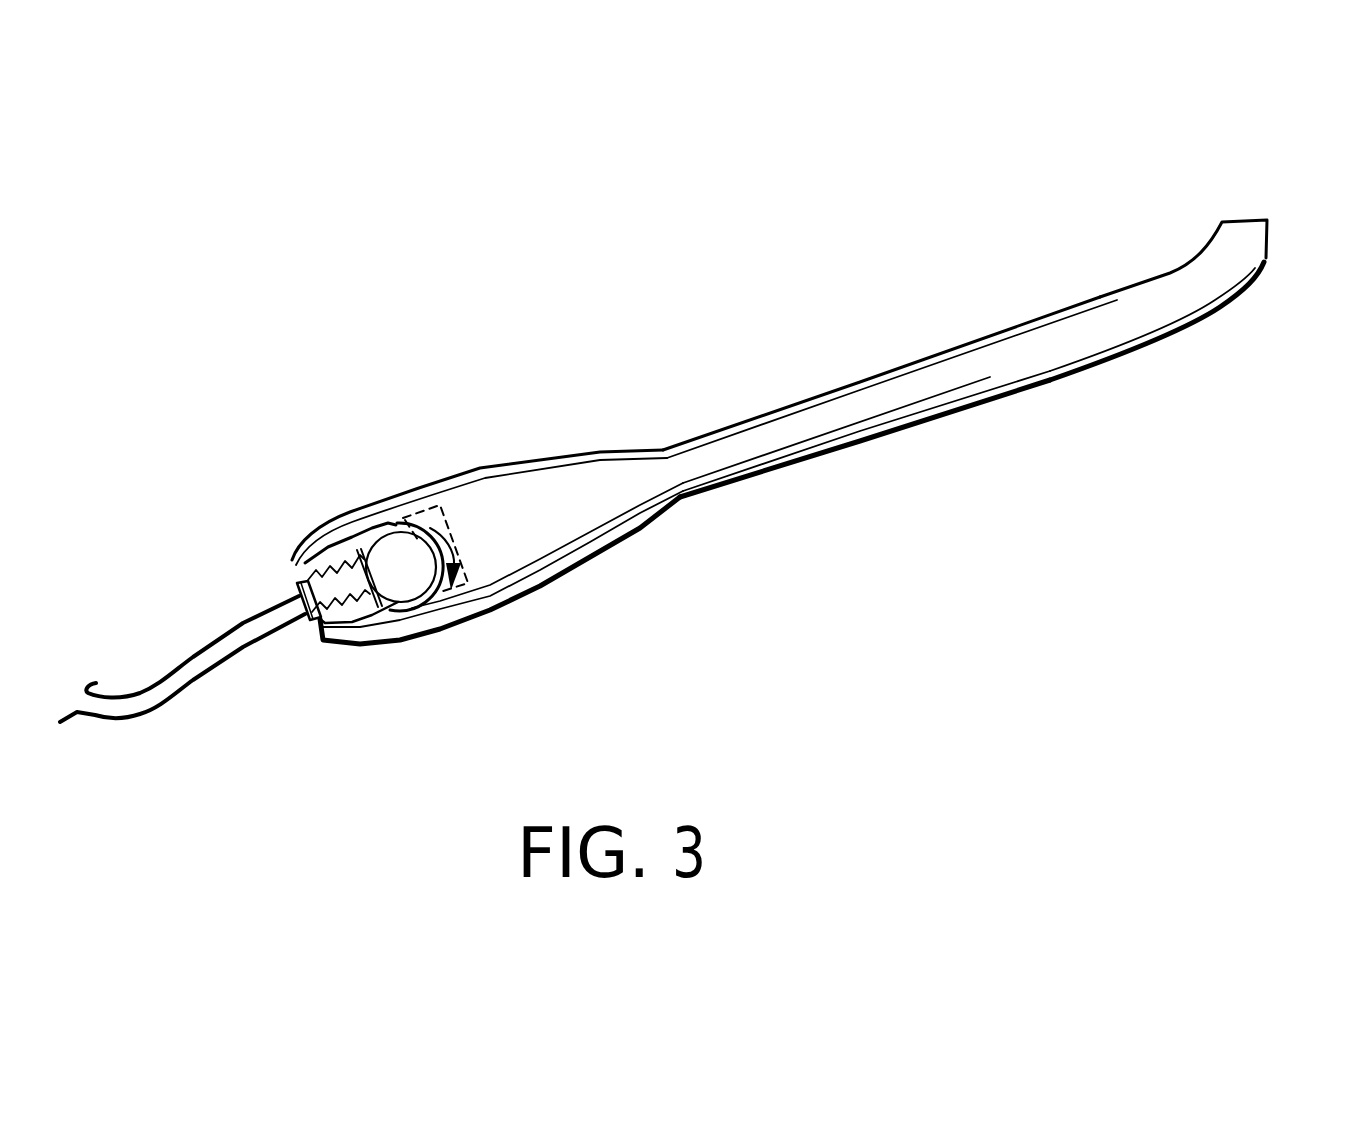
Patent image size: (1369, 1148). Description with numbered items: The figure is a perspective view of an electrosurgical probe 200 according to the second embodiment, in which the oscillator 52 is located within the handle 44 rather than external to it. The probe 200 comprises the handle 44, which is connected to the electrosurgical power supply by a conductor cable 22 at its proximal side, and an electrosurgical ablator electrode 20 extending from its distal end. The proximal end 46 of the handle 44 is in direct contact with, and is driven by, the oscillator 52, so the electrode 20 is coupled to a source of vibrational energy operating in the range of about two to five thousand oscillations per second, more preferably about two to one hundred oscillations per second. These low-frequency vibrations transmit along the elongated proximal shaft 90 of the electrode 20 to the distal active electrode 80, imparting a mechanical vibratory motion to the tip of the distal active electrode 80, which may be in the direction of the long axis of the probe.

The electrosurgical probe 200 is at (570, 295).
The electrosurgical electrode 20 is at (763, 362).
The conductor cable 22 is at (160, 678).
The handle 44 is at (535, 483).
The proximal end 46 is at (294, 561).
The oscillator 52 is at (405, 515).
The distal active electrode 80 is at (1232, 261).
The elongated proximal shaft 90 is at (730, 457).